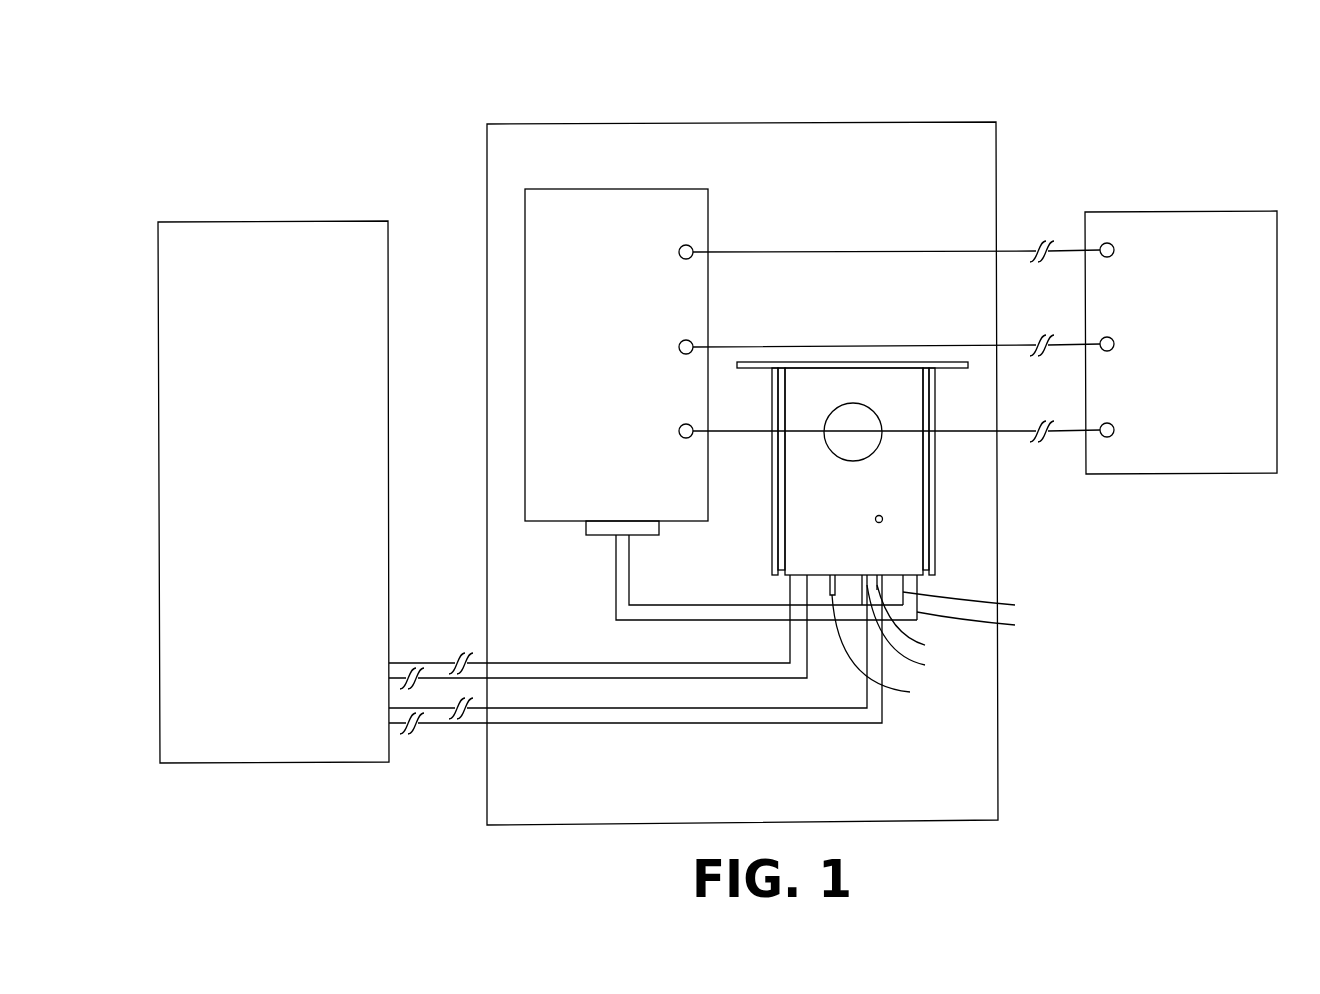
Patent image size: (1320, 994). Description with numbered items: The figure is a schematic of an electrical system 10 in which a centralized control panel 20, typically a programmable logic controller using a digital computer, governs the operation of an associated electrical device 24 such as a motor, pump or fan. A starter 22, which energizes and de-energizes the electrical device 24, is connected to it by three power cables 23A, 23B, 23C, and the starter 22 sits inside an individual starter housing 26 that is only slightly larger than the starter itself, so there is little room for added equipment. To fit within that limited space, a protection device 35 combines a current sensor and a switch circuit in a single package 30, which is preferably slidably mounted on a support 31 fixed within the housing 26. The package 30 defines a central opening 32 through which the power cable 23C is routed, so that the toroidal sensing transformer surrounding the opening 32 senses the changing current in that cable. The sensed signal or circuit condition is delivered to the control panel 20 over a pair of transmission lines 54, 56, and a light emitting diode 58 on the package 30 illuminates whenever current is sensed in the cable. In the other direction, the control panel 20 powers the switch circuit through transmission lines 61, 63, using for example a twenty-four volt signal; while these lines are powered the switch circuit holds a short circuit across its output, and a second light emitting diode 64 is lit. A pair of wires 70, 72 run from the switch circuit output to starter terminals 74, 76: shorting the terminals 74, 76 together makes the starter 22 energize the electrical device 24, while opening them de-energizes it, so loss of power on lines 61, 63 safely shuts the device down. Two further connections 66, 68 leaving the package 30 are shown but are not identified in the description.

The electrical system 10 is at (354, 125).
The control panel 20 is at (245, 222).
The starter 22 is at (608, 189).
The power cable 23A is at (755, 252).
The power cable 23B is at (755, 347).
The power cable 23C is at (733, 431).
The electrical device 24 is at (1185, 212).
The starter housing 26 is at (890, 122).
The single package 30 is at (840, 557).
The support 31 is at (935, 455).
The central opening 32 is at (853, 462).
The protection device 35 is at (966, 546).
The transmission line 54 is at (530, 663).
The transmission line 56 is at (572, 678).
The light emitting diode 58 is at (896, 649).
The transmission line 61 is at (703, 708).
The transmission line 63 is at (600, 724).
The light emitting diode 64 is at (882, 516).
The sensor lead 66 is at (916, 629).
The sensor lead 68 is at (921, 619).
The wire 70 is at (979, 605).
The wire 72 is at (986, 625).
The starter terminal 74 is at (613, 537).
The starter terminal 76 is at (631, 537).